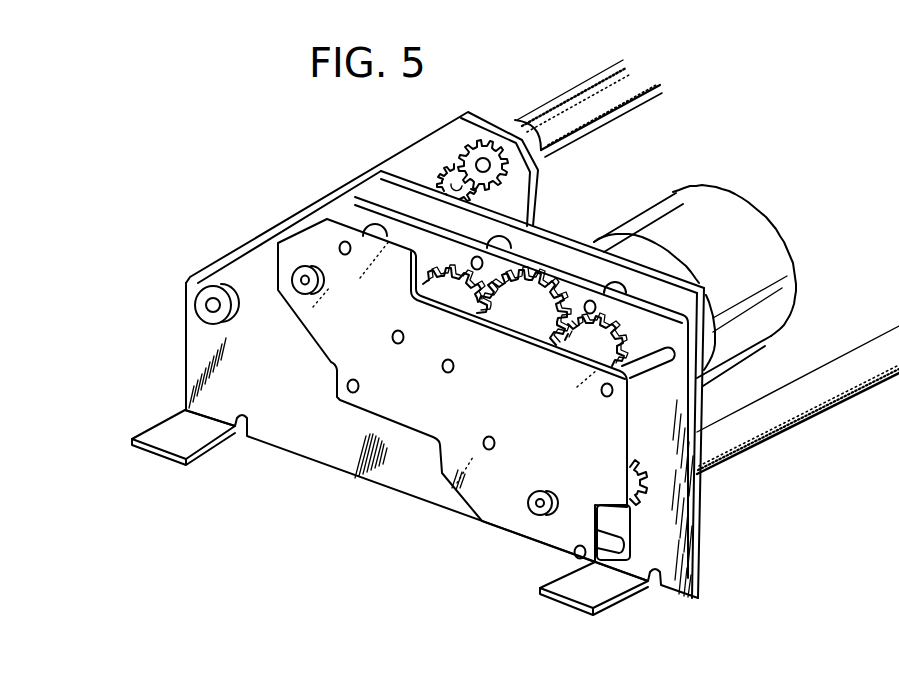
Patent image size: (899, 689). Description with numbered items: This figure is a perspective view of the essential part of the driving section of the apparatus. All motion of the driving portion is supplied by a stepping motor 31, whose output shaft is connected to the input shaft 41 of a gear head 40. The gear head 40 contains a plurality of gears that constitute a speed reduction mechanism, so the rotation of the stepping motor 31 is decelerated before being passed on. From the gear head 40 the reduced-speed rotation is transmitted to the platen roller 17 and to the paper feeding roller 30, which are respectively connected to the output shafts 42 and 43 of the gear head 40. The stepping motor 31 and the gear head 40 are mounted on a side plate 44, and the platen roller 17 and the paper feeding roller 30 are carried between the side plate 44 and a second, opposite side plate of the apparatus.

The platen roller 17 is at (567, 97).
The paper feeding roller 30 is at (826, 430).
The stepping motor 31 is at (769, 333).
The gear head 40 is at (476, 490).
The input shaft 41 is at (573, 347).
The output shaft 42 is at (293, 276).
The output shaft 43 is at (533, 503).
The side plate 44 is at (350, 457).